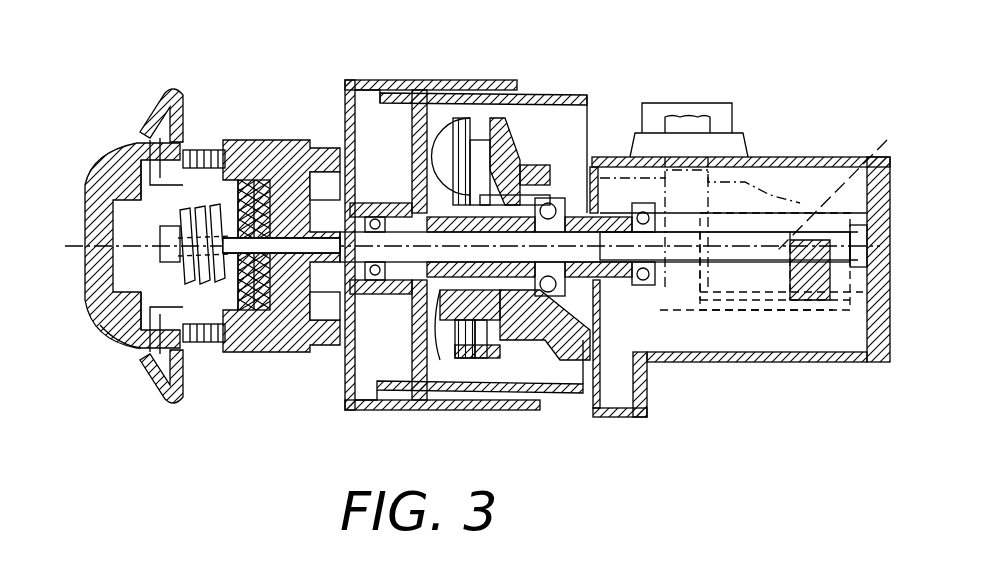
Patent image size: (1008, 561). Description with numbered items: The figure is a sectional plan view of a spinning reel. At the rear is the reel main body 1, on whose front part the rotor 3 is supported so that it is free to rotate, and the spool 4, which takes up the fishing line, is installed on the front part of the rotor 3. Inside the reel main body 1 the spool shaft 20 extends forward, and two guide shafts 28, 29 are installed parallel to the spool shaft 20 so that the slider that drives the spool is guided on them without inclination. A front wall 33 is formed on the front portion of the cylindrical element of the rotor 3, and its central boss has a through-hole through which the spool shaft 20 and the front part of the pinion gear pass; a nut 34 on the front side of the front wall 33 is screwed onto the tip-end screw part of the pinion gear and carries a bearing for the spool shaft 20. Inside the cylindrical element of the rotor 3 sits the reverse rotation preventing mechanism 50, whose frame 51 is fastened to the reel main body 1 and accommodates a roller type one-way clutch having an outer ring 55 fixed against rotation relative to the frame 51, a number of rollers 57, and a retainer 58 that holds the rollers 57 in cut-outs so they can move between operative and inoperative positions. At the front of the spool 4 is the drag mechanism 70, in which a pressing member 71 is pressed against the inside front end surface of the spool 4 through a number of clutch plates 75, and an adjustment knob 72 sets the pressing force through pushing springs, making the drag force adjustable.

The reel main body 1 is at (797, 157).
The rotor 3 is at (567, 93).
The spool 4 is at (268, 140).
The spool shaft 20 is at (678, 250).
The guide shaft 28 is at (884, 157).
The guide shaft 29 is at (752, 300).
The front wall 33 is at (412, 358).
The nut 34 is at (400, 200).
The reverse rotation preventing mechanism 50 is at (492, 357).
The frame 51 is at (503, 343).
The outer ring 55 is at (465, 358).
The rollers 57 is at (470, 187).
The retainer 58 is at (445, 320).
The drag mechanism 70 is at (93, 167).
The pressing member 71 is at (207, 317).
The adjustment knob 72 is at (113, 322).
The clutch plates 75 is at (260, 317).